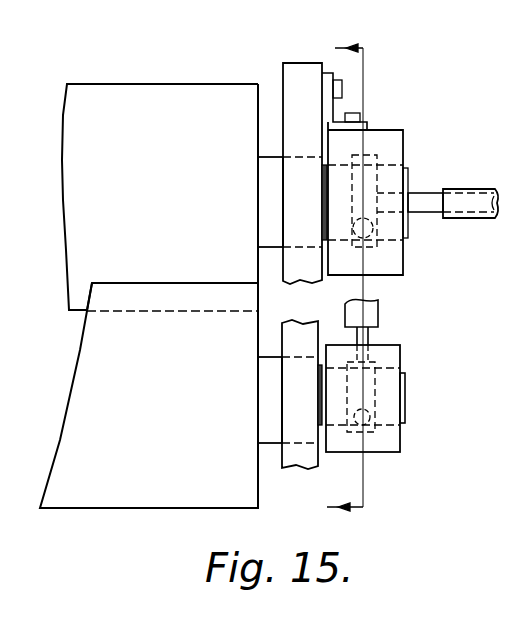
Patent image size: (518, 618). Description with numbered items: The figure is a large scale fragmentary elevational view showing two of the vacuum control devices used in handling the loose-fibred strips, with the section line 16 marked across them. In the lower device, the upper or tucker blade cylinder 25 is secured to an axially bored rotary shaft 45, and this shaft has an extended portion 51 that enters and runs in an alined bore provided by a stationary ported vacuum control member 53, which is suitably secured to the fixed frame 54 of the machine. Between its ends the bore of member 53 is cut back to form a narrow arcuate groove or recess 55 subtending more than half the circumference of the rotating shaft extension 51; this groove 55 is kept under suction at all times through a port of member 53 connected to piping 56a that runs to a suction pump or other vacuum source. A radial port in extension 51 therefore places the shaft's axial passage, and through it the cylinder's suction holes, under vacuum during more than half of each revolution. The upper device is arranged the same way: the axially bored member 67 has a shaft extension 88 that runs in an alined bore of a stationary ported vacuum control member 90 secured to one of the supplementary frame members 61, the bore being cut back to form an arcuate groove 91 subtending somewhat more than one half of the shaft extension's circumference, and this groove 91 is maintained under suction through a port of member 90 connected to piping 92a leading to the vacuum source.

The section line 16- 16 is at (351, 281).
The tucker blade cylinder 25 is at (200, 500).
The rotary shaft 45 is at (262, 388).
The shaft extension 51 is at (407, 397).
The vacuum control member 53 is at (398, 355).
The fixed frame 54 is at (303, 458).
The arcuate groove 55 is at (397, 370).
The piping 56a is at (372, 337).
The supplementary frame member 61 is at (297, 70).
The axially bored member 67 is at (172, 90).
The shaft extension 88 is at (267, 180).
The vacuum control member 90 is at (395, 137).
The arcuate groove 91 is at (377, 183).
The piping 92a is at (420, 203).